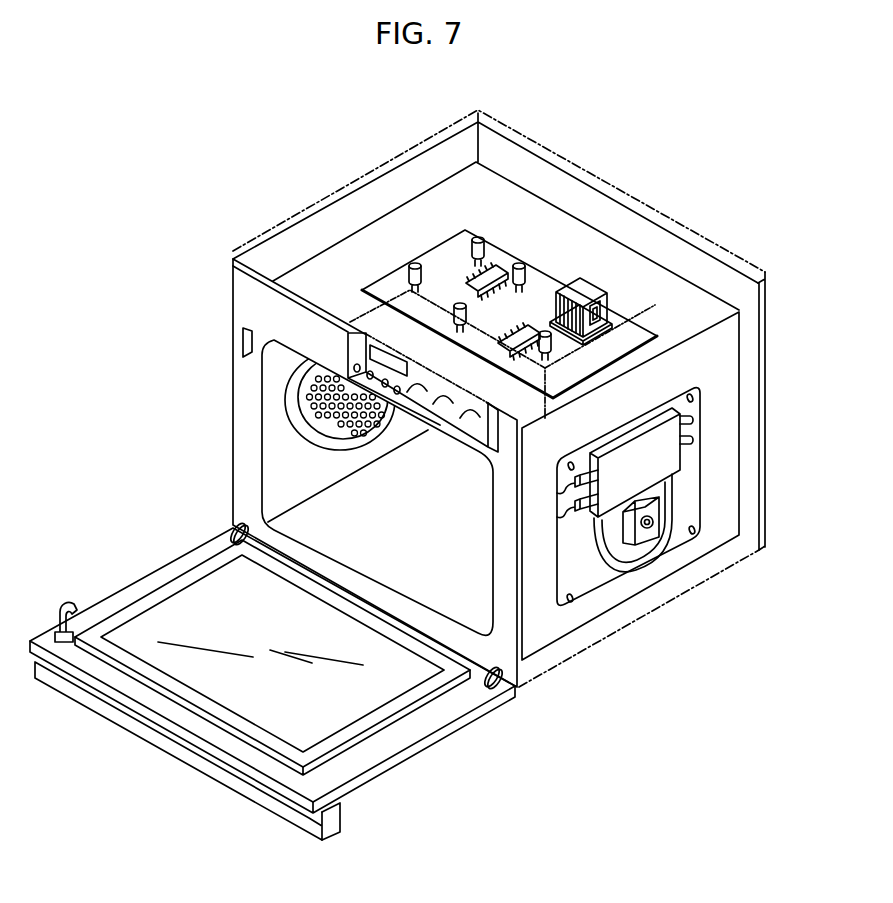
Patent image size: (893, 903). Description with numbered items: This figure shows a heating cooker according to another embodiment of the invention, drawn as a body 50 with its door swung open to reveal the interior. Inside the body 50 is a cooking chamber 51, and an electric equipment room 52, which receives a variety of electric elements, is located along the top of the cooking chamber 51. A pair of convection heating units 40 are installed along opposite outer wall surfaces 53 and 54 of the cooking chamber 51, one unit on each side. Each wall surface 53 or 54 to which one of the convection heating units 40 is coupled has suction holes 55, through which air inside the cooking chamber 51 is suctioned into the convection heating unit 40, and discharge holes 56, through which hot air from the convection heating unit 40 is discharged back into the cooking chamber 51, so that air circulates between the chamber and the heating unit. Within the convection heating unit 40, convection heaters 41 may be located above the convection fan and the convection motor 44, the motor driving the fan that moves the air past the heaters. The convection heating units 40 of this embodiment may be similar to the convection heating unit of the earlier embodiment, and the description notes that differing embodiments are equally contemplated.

The convection heating unit 40 is at (670, 524).
The convection heater 41 is at (691, 418).
The convection motor 44 is at (647, 534).
The body 50 is at (507, 611).
The cooking chamber 51 is at (427, 506).
The electric equipment room 52 is at (535, 223).
The outer wall surface 53 is at (722, 488).
The outer wall surface 54 is at (278, 483).
The suction holes 55 is at (335, 435).
The discharge holes 56 is at (288, 358).